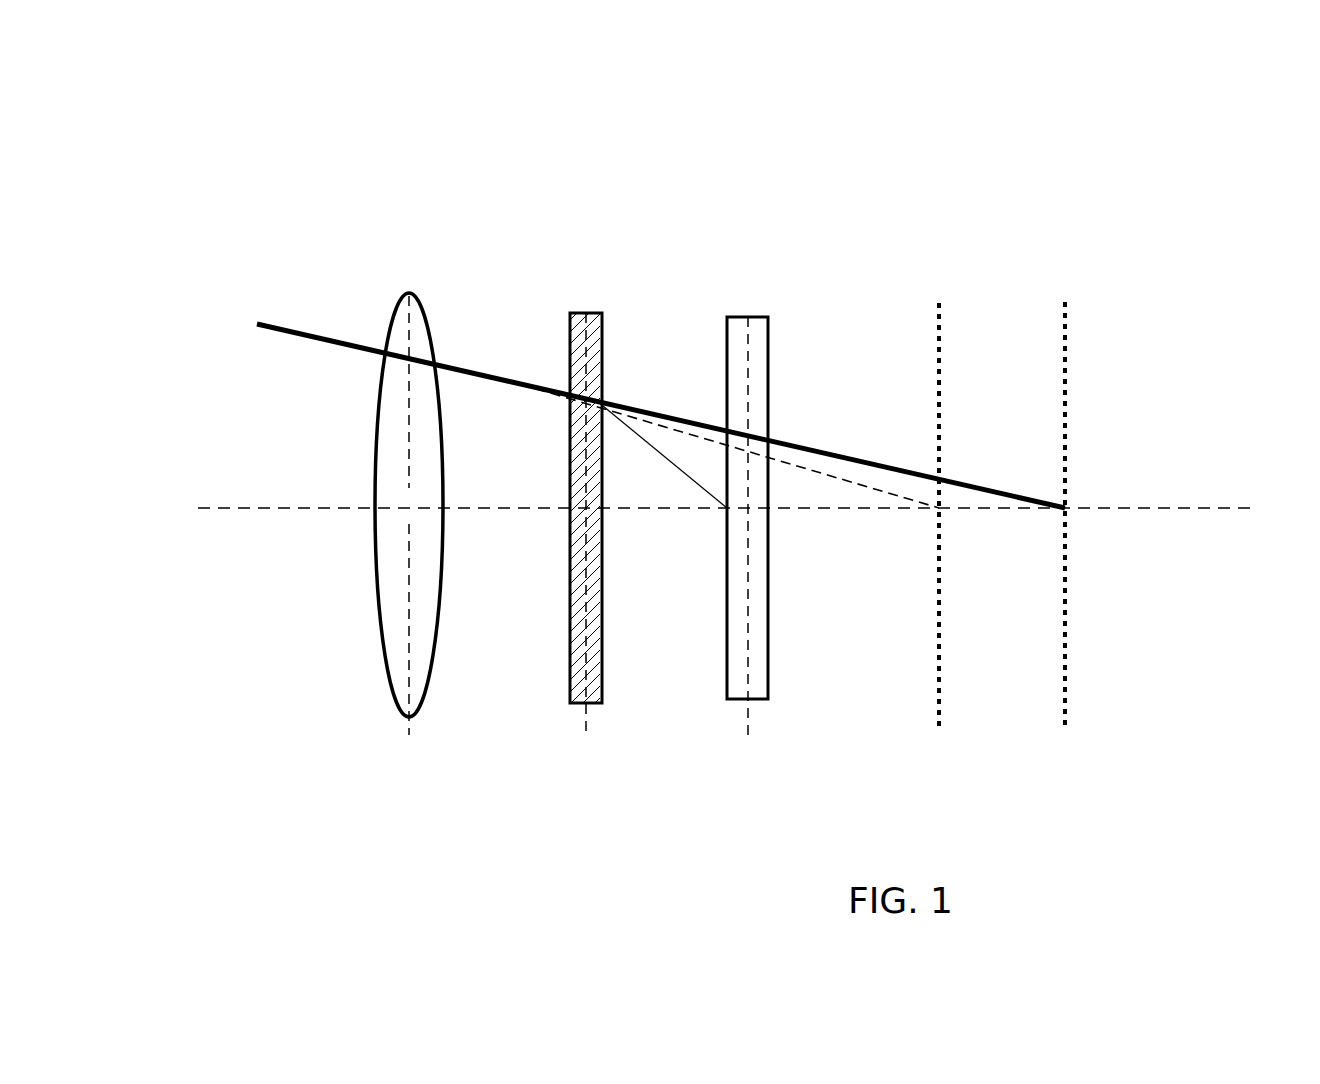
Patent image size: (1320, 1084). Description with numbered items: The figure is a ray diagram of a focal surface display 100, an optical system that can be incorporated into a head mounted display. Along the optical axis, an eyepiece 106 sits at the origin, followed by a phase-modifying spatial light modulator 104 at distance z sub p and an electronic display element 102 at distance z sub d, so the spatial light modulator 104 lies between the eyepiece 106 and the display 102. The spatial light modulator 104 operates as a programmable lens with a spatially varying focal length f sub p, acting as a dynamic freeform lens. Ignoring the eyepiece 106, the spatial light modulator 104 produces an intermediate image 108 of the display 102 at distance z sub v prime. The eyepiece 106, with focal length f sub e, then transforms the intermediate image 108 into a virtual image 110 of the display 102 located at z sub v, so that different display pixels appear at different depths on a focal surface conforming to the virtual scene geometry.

The focal surface display 100 is at (205, 176).
The electronic display element 102 is at (748, 317).
The phase-modifying spatial light modulator 104 is at (594, 313).
The eyepiece 106 is at (409, 293).
The intermediate image 108 is at (939, 303).
The virtual image 110 is at (1065, 302).